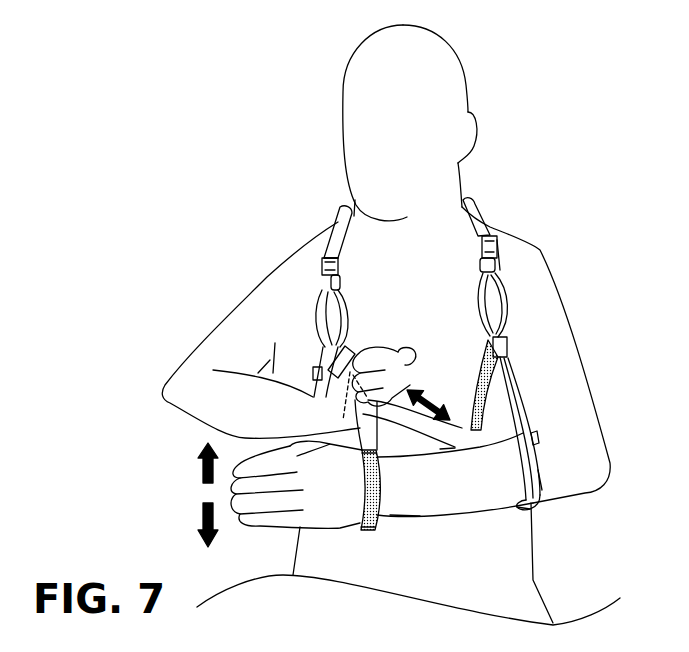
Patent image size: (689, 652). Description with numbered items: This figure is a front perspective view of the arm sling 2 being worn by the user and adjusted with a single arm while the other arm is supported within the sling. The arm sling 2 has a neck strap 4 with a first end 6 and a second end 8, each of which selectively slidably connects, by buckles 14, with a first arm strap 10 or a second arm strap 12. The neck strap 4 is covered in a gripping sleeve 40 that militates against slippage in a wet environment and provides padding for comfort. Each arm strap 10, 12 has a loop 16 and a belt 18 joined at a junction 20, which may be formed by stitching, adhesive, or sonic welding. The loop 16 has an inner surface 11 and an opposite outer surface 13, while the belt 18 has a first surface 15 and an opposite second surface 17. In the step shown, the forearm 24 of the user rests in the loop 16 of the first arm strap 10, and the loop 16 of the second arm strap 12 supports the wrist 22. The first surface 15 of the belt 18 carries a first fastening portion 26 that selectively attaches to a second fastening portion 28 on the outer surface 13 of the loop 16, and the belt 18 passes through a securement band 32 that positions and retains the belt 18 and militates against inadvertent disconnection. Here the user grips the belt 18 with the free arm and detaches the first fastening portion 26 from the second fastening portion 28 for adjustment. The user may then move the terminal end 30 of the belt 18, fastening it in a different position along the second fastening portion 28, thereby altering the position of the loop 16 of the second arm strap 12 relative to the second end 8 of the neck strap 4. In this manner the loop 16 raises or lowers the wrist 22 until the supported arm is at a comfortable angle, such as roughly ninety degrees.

The arm sling 2 is at (503, 175).
The neck strap 4 is at (490, 233).
The first end 6 is at (507, 262).
The second end 8 is at (317, 282).
The first arm strap 10 is at (545, 478).
The inner surface 11 is at (525, 386).
The second arm strap 12 is at (356, 475).
The outer surface 13 is at (374, 524).
The buckles 14 is at (340, 280).
The first surface 15 is at (535, 417).
The loop 16 is at (317, 373).
The second surface 17 is at (403, 428).
The belt 18 is at (507, 307).
The junction 20 is at (323, 330).
The wrist 22 is at (400, 521).
The forearm 24 is at (510, 518).
The first fastening portion 26 is at (538, 437).
The second fastening portion 28 is at (353, 528).
The terminal end 30 is at (447, 451).
The securement band 32 is at (350, 360).
The gripping sleeve 40 is at (340, 223).